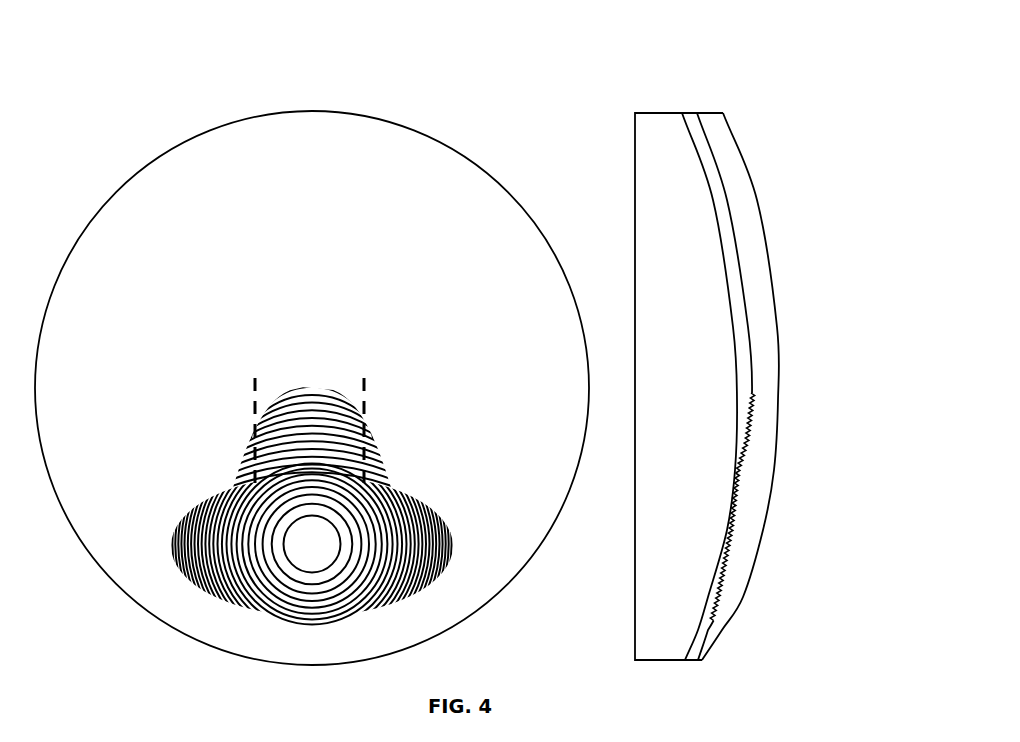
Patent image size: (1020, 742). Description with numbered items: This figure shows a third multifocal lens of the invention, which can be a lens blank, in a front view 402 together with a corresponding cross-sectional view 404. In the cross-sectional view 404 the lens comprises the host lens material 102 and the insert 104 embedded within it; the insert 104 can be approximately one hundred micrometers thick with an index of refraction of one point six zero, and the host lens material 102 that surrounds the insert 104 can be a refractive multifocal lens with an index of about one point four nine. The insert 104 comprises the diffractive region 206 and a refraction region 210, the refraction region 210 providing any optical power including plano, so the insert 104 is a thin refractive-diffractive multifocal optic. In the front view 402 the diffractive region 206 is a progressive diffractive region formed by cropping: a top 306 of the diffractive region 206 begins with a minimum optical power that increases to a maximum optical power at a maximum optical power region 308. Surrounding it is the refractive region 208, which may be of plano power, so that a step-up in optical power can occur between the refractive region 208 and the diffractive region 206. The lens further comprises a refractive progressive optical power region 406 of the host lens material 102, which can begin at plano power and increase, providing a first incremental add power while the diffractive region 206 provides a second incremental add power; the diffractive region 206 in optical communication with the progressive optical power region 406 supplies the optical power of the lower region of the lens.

The front view 402 is at (130, 130).
The cross-sectional view 404 is at (787, 102).
The refractive region 208 is at (212, 202).
The diffractive region 206 is at (173, 355).
The top of the diffractive region 306 is at (313, 384).
The maximum optical power region 308 is at (309, 542).
The progressive optical power region 406 is at (403, 598).
The insert 104 is at (693, 123).
The host lens material 102 is at (667, 182).
The refractive region 210 is at (742, 295).